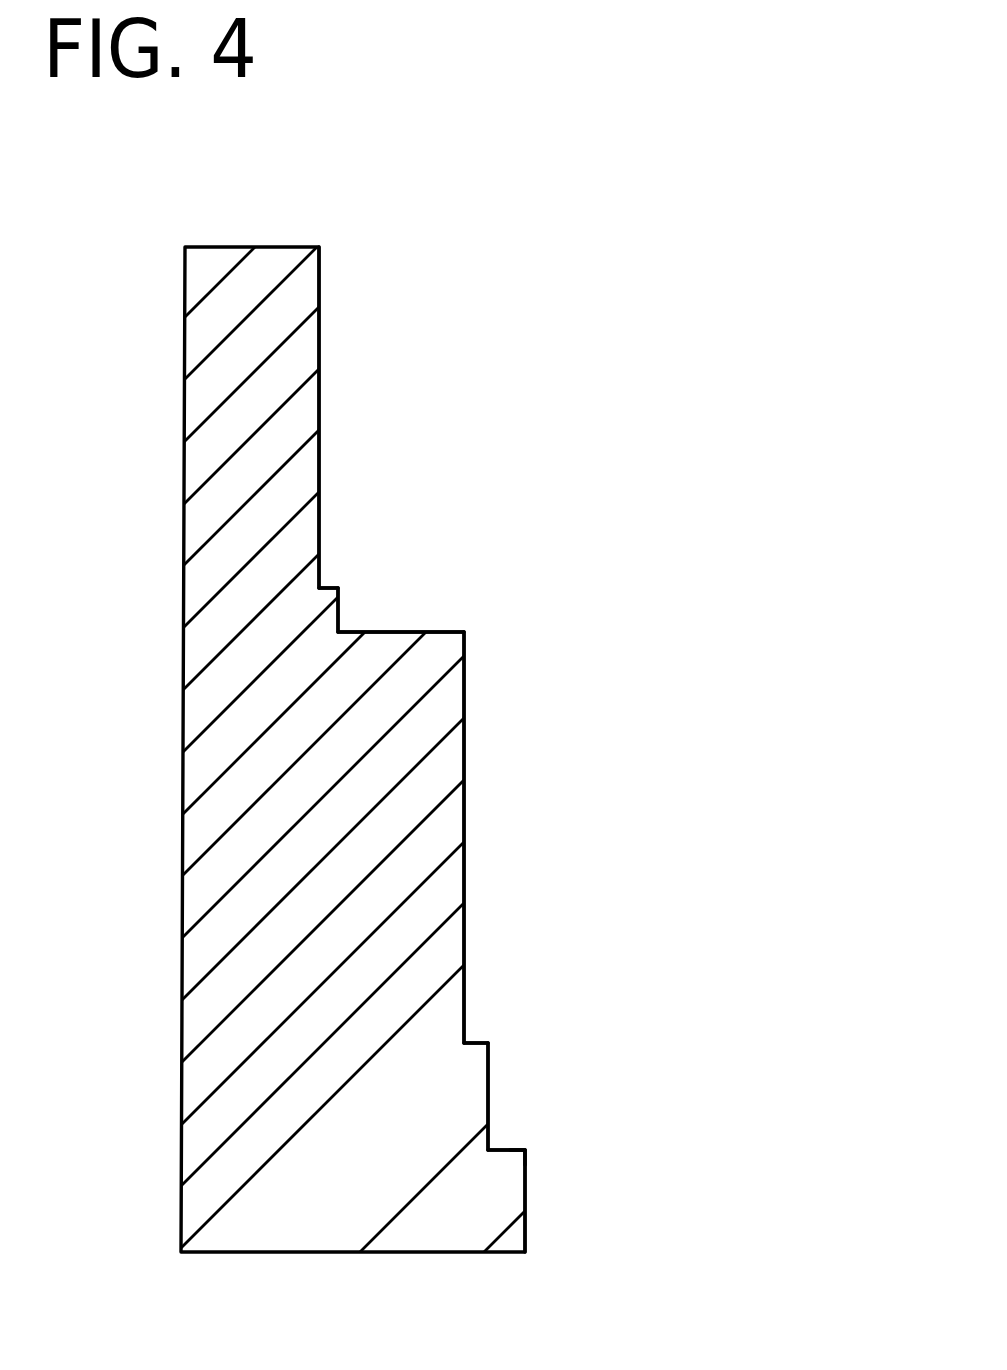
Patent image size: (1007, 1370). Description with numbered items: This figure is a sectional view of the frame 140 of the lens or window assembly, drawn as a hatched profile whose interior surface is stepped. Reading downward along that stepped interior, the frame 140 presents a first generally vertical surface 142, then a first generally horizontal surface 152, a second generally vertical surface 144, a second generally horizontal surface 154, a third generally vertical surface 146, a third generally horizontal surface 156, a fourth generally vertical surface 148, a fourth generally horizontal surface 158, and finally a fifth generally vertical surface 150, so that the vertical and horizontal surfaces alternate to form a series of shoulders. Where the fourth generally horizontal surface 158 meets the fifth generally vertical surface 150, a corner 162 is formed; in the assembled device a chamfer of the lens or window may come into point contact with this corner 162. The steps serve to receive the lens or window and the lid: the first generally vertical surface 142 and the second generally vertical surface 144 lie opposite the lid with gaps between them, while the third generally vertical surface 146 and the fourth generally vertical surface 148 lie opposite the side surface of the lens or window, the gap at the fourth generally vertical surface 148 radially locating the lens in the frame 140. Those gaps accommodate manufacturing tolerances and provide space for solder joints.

The frame 140 is at (489, 212).
The first generally vertical surface 142 is at (320, 332).
The first generally horizontal surface 152 is at (331, 588).
The second generally vertical surface 144 is at (340, 608).
The second generally horizontal surface 154 is at (403, 631).
The third generally vertical surface 146 is at (464, 748).
The third generally horizontal surface 156 is at (473, 1043).
The fourth generally vertical surface 148 is at (489, 1093).
The fourth generally horizontal surface 158 is at (508, 1149).
The corner 162 is at (525, 1150).
The fifth generally vertical surface 150 is at (526, 1202).